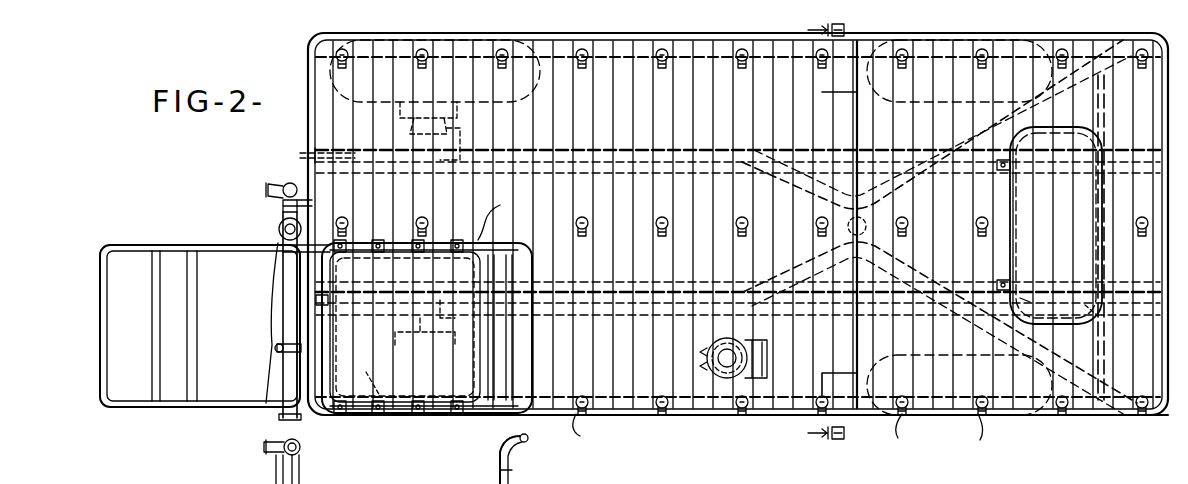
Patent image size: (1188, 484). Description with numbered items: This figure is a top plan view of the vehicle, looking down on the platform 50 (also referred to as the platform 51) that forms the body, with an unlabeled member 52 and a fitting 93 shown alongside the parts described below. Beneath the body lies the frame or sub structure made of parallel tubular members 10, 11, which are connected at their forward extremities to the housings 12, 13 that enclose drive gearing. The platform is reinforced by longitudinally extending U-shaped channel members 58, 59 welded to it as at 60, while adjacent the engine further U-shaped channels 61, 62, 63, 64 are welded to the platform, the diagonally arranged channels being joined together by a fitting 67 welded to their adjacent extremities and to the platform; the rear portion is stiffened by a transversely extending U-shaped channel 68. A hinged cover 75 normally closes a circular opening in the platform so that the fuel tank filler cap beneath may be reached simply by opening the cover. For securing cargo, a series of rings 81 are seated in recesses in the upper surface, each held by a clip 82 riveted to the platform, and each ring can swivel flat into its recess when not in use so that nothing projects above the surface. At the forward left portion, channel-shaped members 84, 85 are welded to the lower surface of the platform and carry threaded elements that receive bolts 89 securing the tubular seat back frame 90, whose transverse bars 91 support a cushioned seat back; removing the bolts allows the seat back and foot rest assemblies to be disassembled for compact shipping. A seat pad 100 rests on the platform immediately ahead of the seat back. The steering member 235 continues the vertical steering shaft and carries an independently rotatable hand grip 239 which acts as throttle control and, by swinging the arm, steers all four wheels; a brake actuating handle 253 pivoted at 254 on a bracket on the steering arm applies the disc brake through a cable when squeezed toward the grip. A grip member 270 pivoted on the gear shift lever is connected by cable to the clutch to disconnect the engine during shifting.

The tubular member 10 is at (606, 318).
The tubular member 11 is at (622, 145).
The housing 12 is at (405, 326).
The housing 13 is at (407, 143).
The platform 50 is at (708, 415).
The platform 51 is at (1022, 412).
The section line B 52 is at (772, 418).
The U-shaped channel member 58 is at (300, 156).
The U-shaped channel member 59 is at (316, 300).
The weld 60 is at (1062, 205).
The U-shaped channel 61 is at (1022, 143).
The U-shaped channel 62 is at (1039, 300).
The U-shaped channel 63 is at (934, 124).
The U-shaped channel 64 is at (778, 264).
The fitting 67 is at (888, 200).
The transversely extending U-shaped channel 68 is at (1090, 300).
The cover 75 is at (708, 356).
The ring 81 is at (660, 62).
The clip 82 is at (781, 437).
The channel-shaped member 84 is at (368, 262).
The channel-shaped member 85 is at (360, 380).
The bolt 89 is at (436, 276).
The tubular seat back frame 90 is at (499, 216).
The transverse bar 91 is at (496, 380).
The nozzle 93 is at (487, 476).
The seat pad 100 is at (330, 352).
The steering member 235 is at (300, 476).
The hand grip 239 is at (282, 418).
The actuating handle 253 is at (280, 391).
The pivot 254 is at (278, 348).
The grip member 270 is at (280, 186).